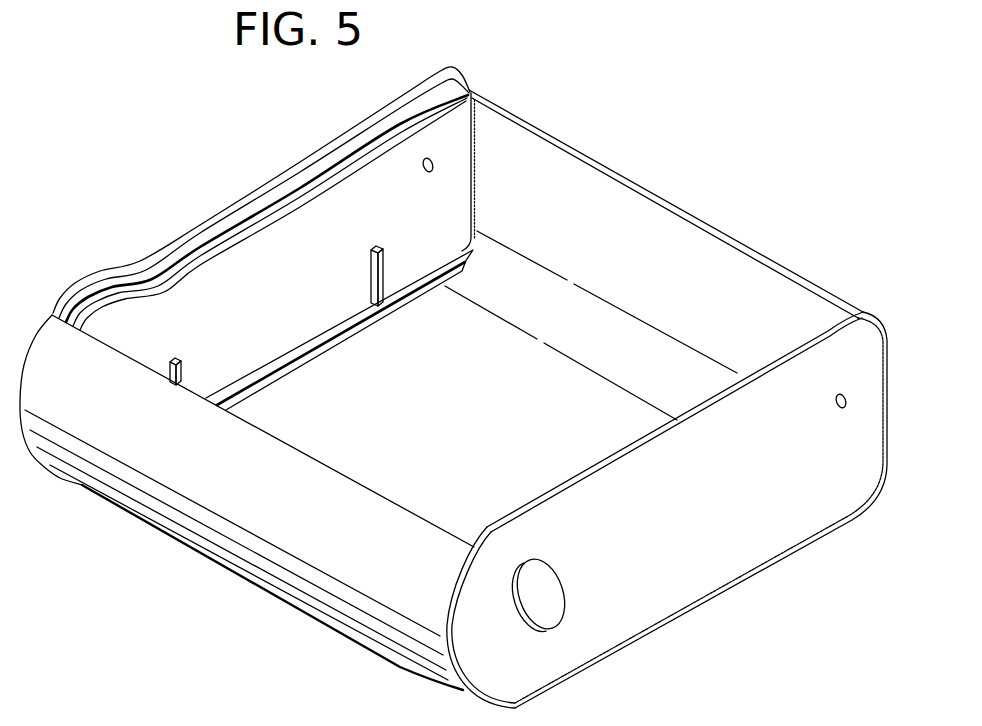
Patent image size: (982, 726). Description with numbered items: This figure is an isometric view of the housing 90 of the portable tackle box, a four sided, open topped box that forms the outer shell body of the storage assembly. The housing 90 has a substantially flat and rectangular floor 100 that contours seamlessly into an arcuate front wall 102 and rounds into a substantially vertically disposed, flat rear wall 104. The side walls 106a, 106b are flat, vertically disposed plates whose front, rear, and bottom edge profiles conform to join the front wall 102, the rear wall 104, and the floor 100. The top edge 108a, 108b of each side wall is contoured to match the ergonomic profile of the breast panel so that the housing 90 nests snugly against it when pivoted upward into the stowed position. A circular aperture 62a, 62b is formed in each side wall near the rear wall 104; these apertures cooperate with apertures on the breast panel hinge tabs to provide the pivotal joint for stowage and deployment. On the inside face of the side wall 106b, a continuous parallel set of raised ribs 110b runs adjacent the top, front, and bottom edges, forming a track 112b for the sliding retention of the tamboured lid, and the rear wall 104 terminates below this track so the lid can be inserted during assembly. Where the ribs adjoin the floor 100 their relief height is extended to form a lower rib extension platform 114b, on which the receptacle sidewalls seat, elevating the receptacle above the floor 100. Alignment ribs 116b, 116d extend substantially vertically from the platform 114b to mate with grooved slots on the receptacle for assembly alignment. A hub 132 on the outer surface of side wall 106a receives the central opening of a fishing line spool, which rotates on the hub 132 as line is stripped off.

The housing 90 is at (165, 217).
The floor 100 is at (473, 422).
The front wall 102 is at (278, 514).
The rear wall 104 is at (654, 261).
The side wall 106a is at (735, 517).
The side wall 106b is at (303, 291).
The top edge 108a is at (670, 432).
The top edge 108b is at (283, 173).
The raised ribs 110b is at (354, 147).
The track 112b is at (472, 92).
The lower rib extension platform 114b is at (297, 345).
The alignment rib 116b is at (185, 372).
The alignment rib 116d is at (370, 270).
The circular aperture 62a is at (837, 403).
The circular aperture 62b is at (433, 163).
The hub 132 is at (545, 610).